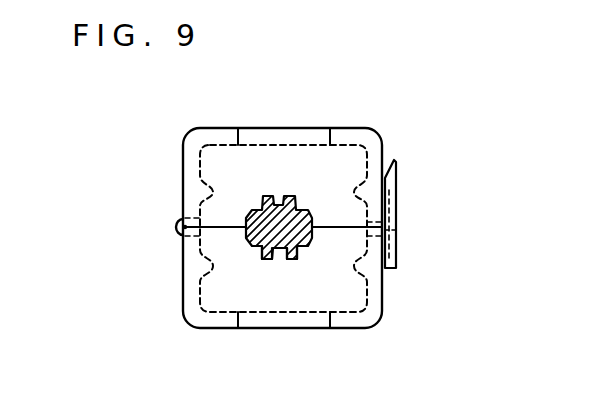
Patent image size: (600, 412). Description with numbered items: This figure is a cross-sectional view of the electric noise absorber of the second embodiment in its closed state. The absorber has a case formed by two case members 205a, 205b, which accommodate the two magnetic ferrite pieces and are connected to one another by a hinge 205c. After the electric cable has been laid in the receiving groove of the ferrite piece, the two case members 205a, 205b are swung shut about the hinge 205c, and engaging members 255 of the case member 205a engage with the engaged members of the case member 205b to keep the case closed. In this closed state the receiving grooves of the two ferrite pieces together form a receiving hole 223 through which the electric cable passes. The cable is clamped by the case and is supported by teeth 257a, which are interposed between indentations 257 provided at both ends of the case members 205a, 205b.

The case member 205a is at (290, 318).
The case member 205b is at (257, 127).
The hinge 205c is at (180, 227).
The receiving hole 223 is at (262, 252).
The engaging members 255 is at (397, 177).
The indentations 257 is at (285, 198).
The teeth 257a is at (297, 254).